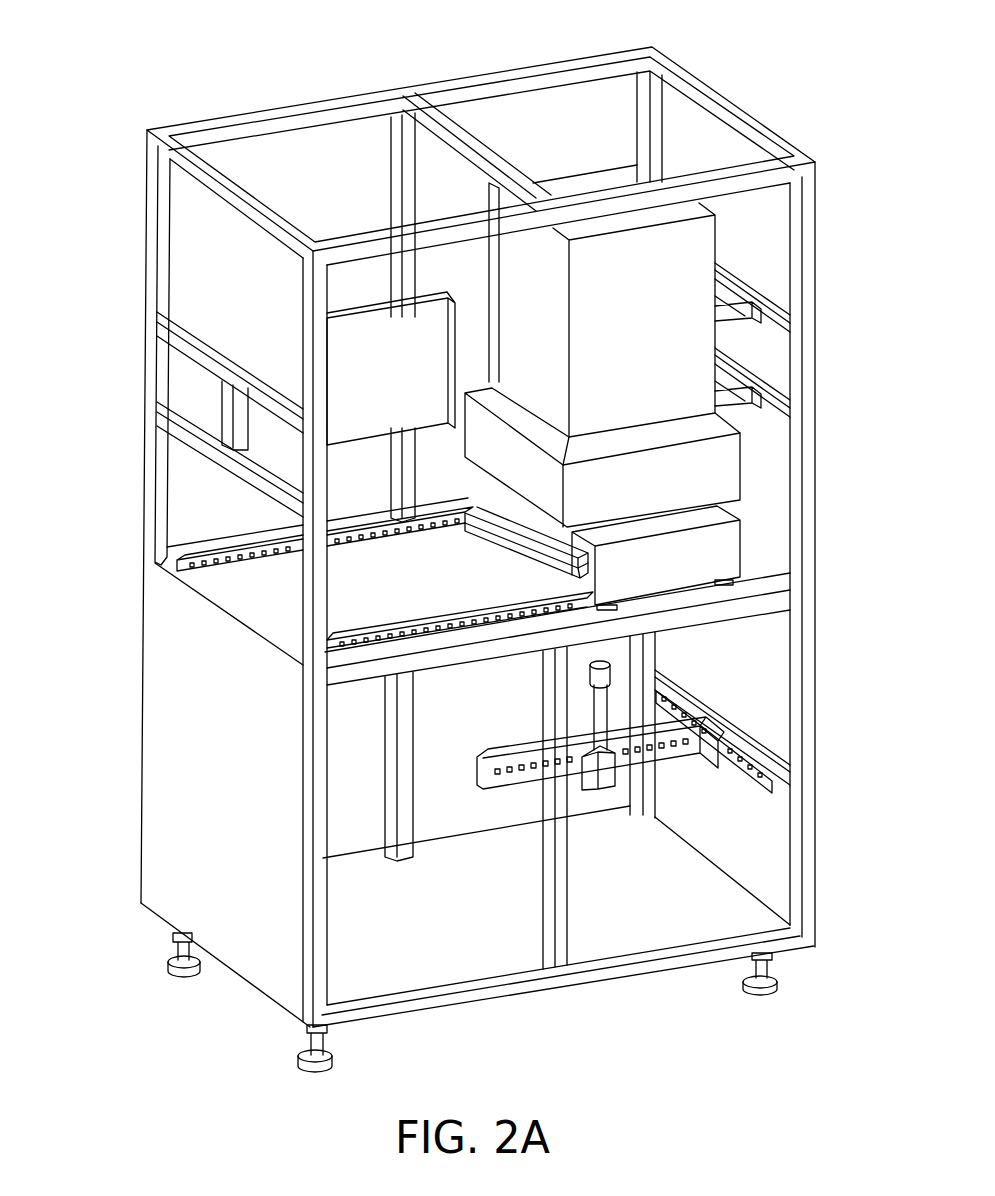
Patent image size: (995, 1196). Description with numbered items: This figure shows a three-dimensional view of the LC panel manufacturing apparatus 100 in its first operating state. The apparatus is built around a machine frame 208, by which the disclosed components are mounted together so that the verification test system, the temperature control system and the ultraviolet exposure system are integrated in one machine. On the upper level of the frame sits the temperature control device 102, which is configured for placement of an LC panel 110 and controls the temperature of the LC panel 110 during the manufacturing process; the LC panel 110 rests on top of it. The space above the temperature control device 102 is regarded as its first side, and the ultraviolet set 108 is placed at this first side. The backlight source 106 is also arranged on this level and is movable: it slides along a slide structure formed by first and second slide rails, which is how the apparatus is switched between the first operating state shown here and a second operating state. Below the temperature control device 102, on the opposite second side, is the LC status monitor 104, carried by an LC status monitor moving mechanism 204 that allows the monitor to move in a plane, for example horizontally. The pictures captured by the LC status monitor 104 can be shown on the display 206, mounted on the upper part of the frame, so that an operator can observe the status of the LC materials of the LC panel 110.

The LC panel manufacturing apparatus 100 is at (169, 40).
The temperature control device 102 is at (512, 540).
The LC status monitor 104 is at (602, 702).
The backlight source 106 is at (705, 551).
The ultraviolet set 108 is at (700, 238).
The LC panel 110 is at (560, 560).
The LC status monitor moving mechanism 204 is at (518, 787).
The display 206 is at (352, 353).
The machine frame 208 is at (215, 768).